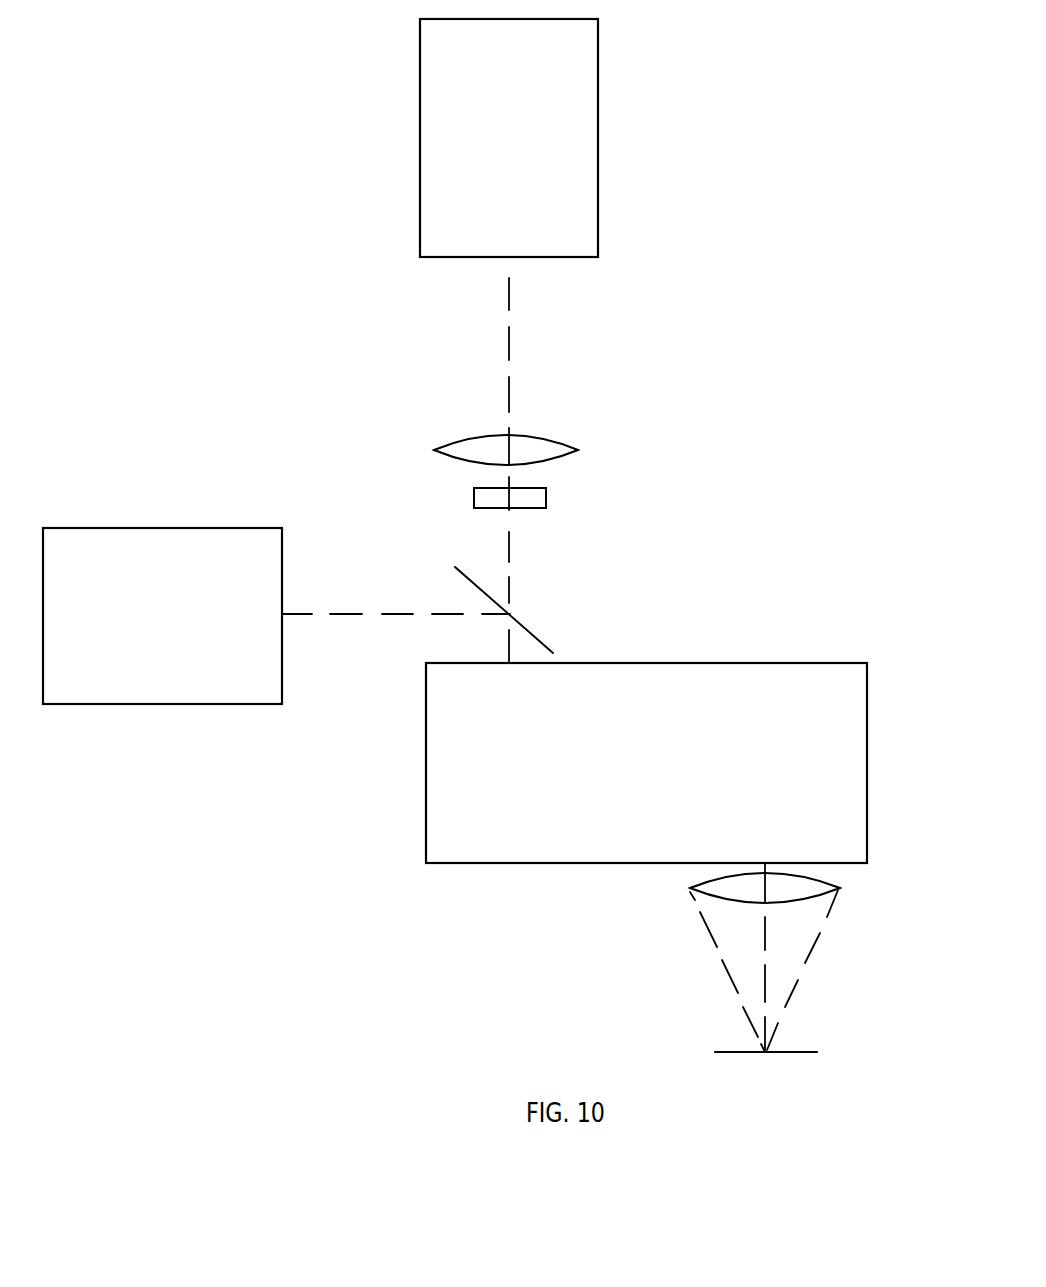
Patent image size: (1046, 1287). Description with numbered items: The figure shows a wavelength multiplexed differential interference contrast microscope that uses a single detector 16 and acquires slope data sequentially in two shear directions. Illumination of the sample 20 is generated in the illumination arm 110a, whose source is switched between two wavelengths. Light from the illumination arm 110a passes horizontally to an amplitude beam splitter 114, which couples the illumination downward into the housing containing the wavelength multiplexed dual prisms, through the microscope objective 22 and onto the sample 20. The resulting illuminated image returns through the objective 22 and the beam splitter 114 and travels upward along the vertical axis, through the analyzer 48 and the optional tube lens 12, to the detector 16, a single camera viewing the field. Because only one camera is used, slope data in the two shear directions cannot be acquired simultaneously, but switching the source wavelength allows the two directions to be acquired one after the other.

The detector 16 is at (598, 133).
The tube lens 12 is at (570, 458).
The analyzer 48 is at (538, 510).
The amplitude beam splitter 114 is at (462, 576).
The illumination arm 110a is at (142, 528).
The microscope objective 22 is at (835, 885).
The sample 20 is at (795, 1050).